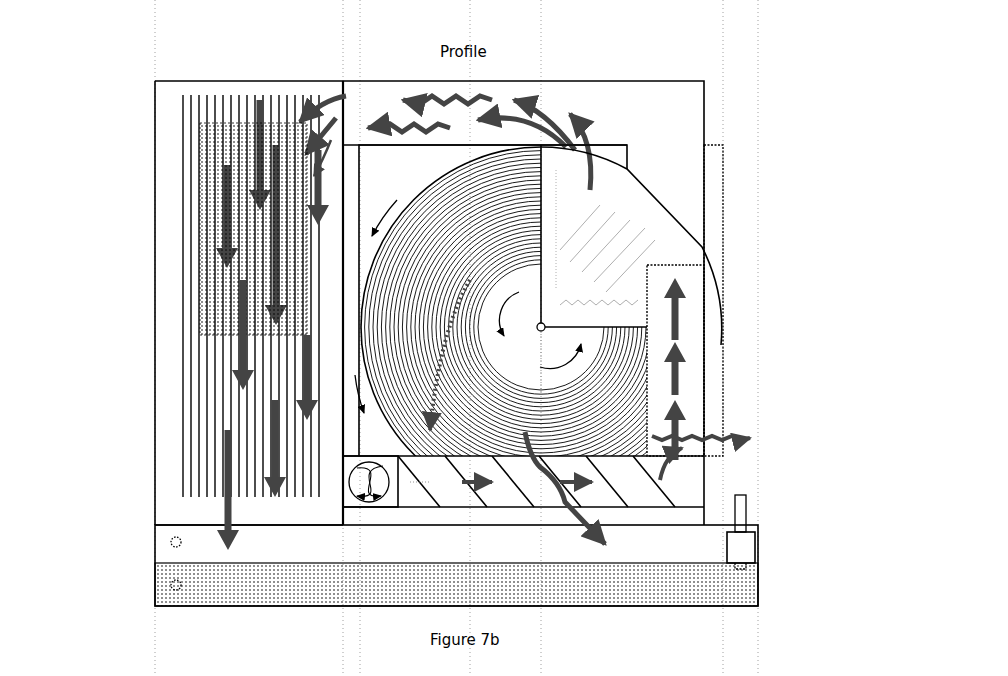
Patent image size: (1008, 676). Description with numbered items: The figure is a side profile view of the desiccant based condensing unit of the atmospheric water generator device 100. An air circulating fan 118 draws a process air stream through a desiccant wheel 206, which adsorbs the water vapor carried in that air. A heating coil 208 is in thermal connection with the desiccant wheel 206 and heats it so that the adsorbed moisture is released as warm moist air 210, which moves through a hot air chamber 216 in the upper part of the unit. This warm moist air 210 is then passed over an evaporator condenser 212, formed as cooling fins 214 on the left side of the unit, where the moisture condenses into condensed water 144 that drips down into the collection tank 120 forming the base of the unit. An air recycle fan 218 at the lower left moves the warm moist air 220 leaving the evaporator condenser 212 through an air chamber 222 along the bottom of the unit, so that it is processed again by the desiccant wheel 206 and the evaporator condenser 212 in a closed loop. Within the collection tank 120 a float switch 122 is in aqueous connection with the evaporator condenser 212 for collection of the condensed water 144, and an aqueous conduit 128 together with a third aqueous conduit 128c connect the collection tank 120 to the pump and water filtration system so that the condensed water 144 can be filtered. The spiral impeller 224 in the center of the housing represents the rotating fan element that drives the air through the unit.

The device 100 is at (687, 46).
The air circulating fan 118 is at (692, 168).
The collection tank 120 is at (153, 563).
The float switch 122 is at (744, 545).
The aqueous conduit 128 is at (167, 542).
The third aqueous conduit 128c is at (167, 585).
The condensed water 144 is at (744, 590).
The desiccant wheel 206 is at (625, 362).
The heating coil 208 is at (667, 208).
The warm moist air 210 is at (652, 243).
The evaporator condenser 212 is at (177, 106).
The cooling fins 214 is at (177, 172).
The hot air chamber 216 is at (479, 143).
The air recycle fan 218 is at (335, 482).
The warm moist air 220 is at (227, 375).
The air chamber 222 is at (683, 489).
The centrifugal fan impeller 224 is at (427, 278).